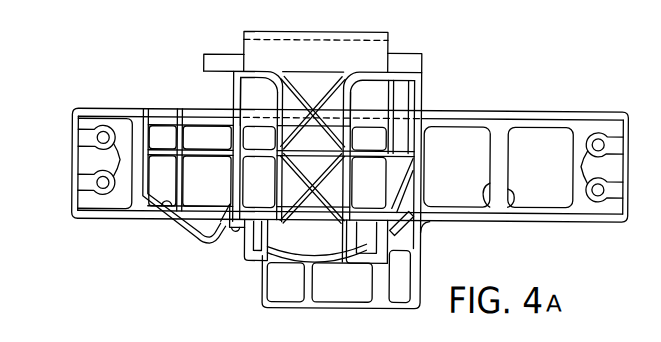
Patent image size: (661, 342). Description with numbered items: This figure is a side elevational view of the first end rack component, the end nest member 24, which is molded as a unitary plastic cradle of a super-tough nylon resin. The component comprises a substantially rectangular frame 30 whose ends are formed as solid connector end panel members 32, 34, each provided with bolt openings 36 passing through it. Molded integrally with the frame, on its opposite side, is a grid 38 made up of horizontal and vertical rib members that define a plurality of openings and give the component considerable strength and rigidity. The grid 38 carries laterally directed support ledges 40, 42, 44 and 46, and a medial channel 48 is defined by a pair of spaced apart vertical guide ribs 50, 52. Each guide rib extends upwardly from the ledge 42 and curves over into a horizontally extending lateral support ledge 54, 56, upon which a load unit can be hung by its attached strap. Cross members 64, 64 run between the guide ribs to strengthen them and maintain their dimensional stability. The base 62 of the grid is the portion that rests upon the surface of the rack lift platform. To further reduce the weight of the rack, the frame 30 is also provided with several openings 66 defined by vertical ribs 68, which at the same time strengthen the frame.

The end nest member 24 is at (475, 108).
The rectangular frame 30 is at (537, 108).
The connector end panel member 32 is at (610, 168).
The connector end panel member 34 is at (88, 162).
The bolt openings 36 is at (103, 139).
The grid 38 is at (416, 98).
The support ledge 40 is at (421, 229).
The support ledge 42 is at (318, 245).
The support ledge 44 is at (233, 236).
The support ledge 46 is at (173, 222).
The medial channel 48 is at (340, 76).
The vertical guide rib 50 is at (349, 142).
The vertical guide rib 52 is at (275, 174).
The lateral support ledge 54 is at (395, 68).
The lateral support ledge 56 is at (218, 57).
The base 62 is at (327, 308).
The cross members 64 is at (307, 95).
The openings 66 is at (513, 203).
The vertical ribs 68 is at (497, 157).